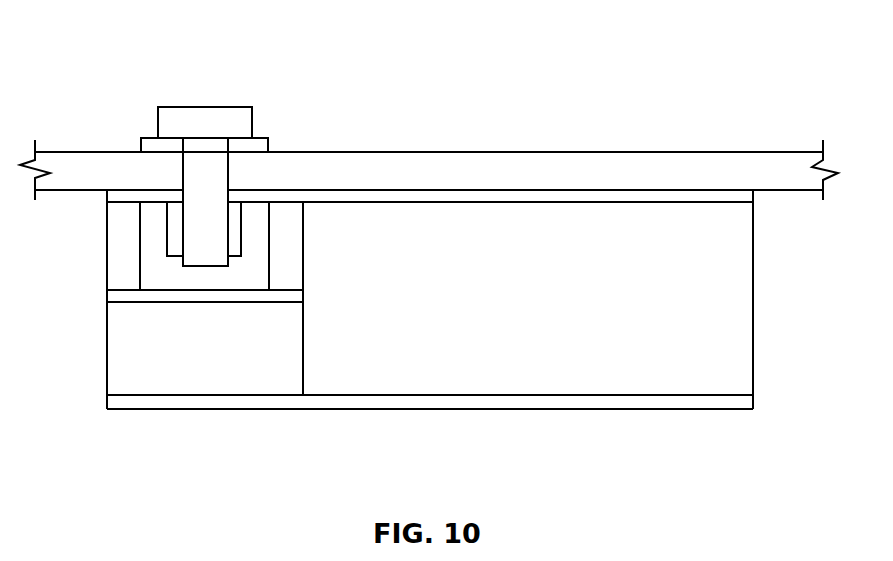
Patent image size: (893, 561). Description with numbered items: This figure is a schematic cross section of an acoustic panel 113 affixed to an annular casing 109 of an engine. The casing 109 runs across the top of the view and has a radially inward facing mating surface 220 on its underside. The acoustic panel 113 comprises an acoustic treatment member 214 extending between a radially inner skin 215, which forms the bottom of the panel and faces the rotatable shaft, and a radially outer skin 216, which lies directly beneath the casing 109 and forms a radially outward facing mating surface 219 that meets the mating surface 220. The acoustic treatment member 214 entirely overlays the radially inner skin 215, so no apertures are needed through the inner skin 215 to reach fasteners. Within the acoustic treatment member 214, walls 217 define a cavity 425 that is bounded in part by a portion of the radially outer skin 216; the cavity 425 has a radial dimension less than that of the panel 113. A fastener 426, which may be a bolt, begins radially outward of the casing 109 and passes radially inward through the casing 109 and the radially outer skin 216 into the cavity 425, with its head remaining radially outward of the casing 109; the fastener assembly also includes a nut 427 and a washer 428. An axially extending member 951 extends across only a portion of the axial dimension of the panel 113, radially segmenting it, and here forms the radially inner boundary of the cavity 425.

The annular casing 109 is at (787, 150).
The acoustic panel 113 is at (446, 250).
The acoustic treatment member 214 is at (425, 329).
The radially inner skin 215 is at (590, 410).
The radially outer skin 216 is at (608, 195).
The walls 217 is at (307, 367).
The radially outward facing mating surface 219 is at (723, 189).
The radially inward facing mating surface 220 is at (800, 190).
The cavity 425 is at (162, 272).
The fastener 426 is at (183, 123).
The nut 427 is at (176, 224).
The washer 428 is at (260, 146).
The axially extending member 951 is at (145, 293).